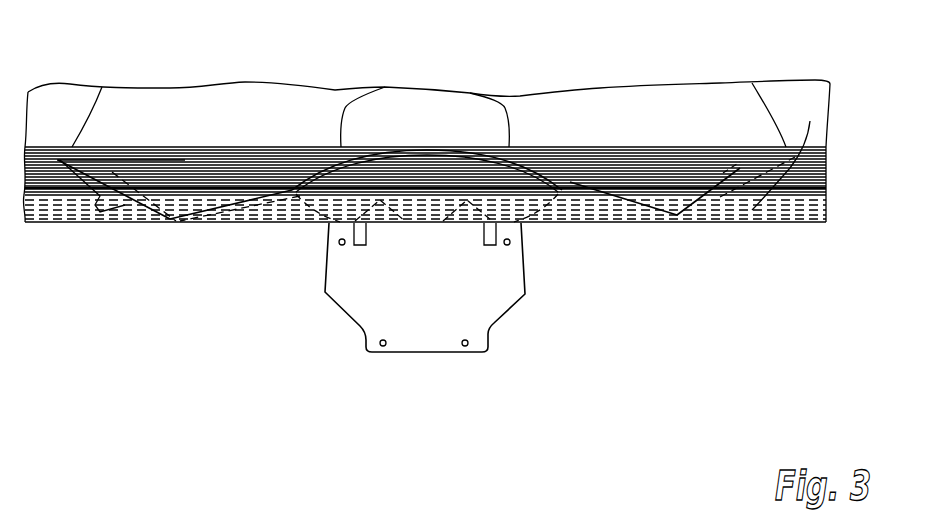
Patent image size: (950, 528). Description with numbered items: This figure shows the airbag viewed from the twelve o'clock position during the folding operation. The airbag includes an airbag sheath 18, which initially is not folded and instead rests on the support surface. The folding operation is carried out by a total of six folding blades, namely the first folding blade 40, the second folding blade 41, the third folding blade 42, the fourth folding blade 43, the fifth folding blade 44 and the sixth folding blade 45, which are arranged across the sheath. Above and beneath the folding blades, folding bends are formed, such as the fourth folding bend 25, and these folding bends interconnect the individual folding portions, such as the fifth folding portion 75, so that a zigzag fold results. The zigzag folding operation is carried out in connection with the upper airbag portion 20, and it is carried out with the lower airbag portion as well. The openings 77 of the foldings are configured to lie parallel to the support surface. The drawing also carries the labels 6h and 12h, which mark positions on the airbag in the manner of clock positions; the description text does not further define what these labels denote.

The dome 6h is at (425, 102).
The connection points 77 is at (165, 168).
The fin 40 is at (746, 212).
The fin 41 is at (786, 153).
The first layer 42 is at (827, 149).
The second layer 43 is at (826, 173).
The third layer 44 is at (827, 178).
The fourth layer 45 is at (827, 196).
The strut 25 is at (170, 222).
The lens element 75 is at (233, 194).
The bracket 18 is at (478, 332).
The assembly 20 is at (611, 233).
The tabs 12h is at (425, 306).